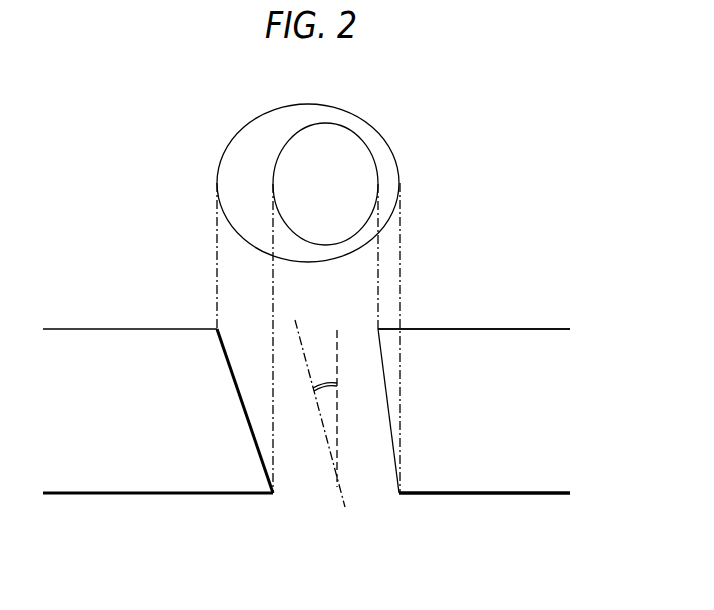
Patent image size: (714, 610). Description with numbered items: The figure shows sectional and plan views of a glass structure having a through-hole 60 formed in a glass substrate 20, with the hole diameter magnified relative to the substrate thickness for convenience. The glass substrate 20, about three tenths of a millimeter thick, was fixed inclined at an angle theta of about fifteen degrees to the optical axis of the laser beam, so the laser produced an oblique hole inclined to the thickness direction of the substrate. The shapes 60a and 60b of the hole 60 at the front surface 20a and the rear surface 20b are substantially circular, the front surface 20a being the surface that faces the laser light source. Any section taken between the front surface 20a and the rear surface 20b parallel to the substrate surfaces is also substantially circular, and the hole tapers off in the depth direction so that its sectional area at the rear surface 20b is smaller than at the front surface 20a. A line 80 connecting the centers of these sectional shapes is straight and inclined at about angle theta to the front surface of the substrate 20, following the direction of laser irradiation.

The glass substrate 20 is at (107, 340).
The front surface 20a is at (484, 330).
The rear surface 20b is at (485, 496).
The through-hole 60 is at (300, 297).
The shape of the hole at the front surface 60a is at (233, 138).
The shape of the hole at the rear surface 60b is at (382, 138).
The line connecting the centers of the sectional shapes 80 is at (340, 493).